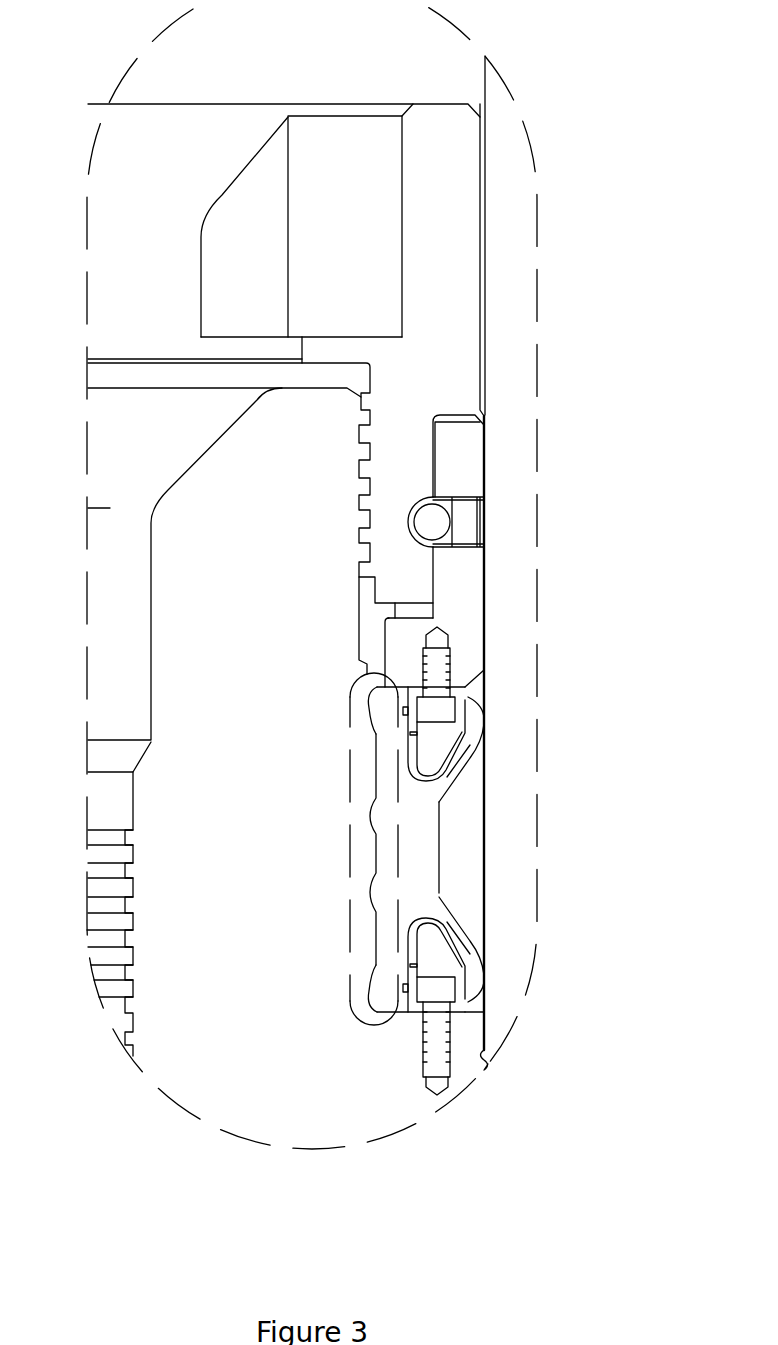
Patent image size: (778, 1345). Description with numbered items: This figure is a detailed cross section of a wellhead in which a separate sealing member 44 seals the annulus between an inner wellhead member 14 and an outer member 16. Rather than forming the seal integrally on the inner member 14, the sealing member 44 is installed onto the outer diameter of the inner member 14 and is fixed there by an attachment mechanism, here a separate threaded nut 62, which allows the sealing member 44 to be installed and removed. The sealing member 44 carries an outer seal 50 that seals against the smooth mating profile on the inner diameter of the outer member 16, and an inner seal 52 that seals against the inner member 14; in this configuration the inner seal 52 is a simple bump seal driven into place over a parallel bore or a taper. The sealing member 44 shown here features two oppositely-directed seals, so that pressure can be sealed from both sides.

The inner wellhead member 14 is at (208, 1063).
The outer member 16 is at (515, 210).
The sealing member 44 is at (417, 848).
The outer seal 50 is at (494, 722).
The inner seal 52 is at (360, 712).
The threaded nut 62 is at (440, 143).